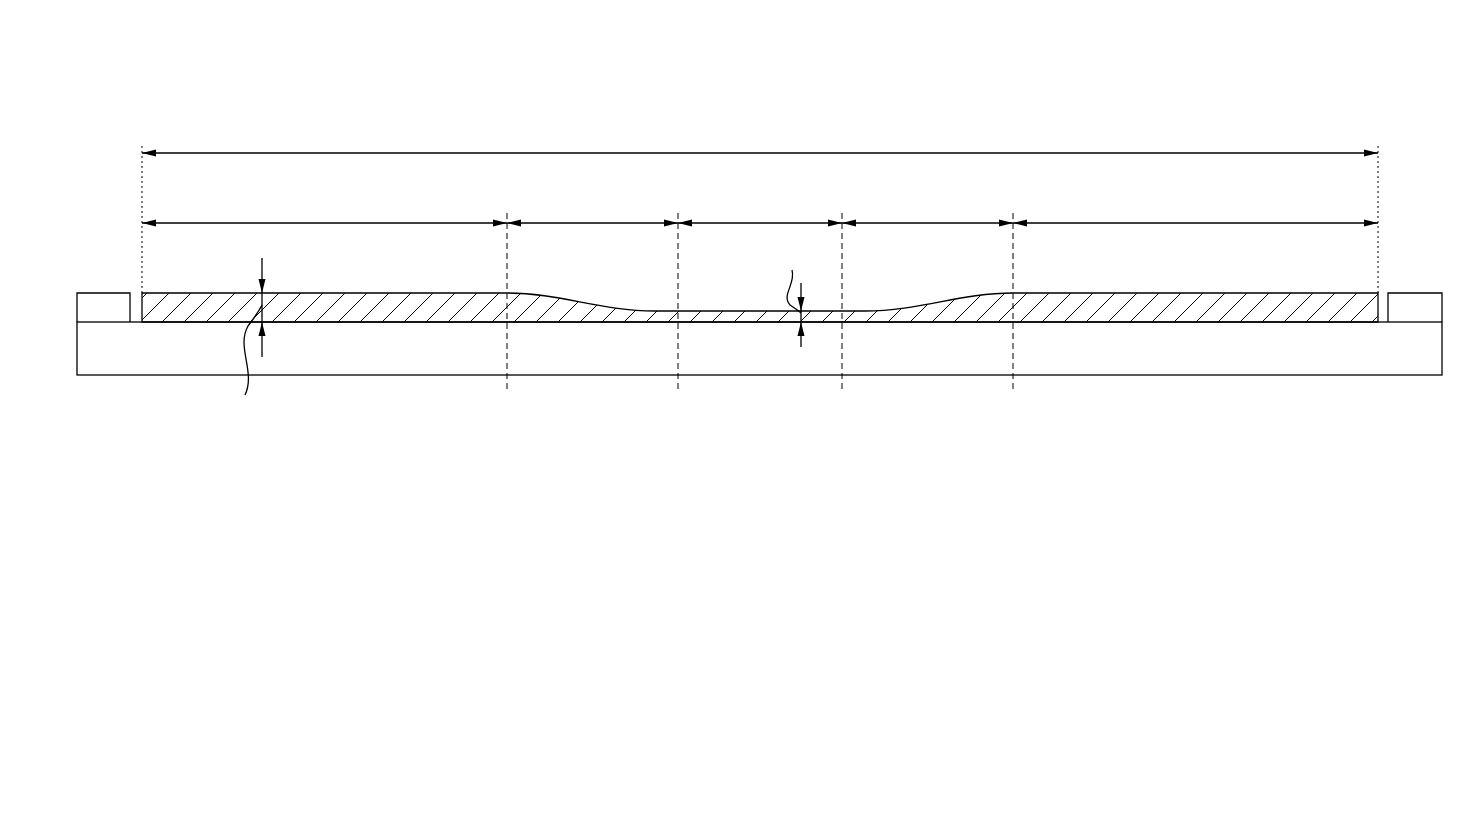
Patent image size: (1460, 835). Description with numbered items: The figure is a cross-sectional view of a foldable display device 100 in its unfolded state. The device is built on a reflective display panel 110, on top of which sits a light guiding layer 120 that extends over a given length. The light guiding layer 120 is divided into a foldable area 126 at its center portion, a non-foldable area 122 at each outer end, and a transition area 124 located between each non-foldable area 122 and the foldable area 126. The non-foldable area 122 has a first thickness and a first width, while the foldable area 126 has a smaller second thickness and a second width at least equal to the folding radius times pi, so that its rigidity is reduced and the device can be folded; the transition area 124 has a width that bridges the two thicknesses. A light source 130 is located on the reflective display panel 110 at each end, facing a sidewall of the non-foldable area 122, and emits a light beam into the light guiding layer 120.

The foldable display device 100 is at (1391, 77).
The reflective display panel 110 is at (1203, 365).
The light guiding layer 120 is at (760, 426).
The non-foldable area 122 is at (452, 312).
The transition area 124 is at (617, 316).
The foldable area 126 is at (757, 312).
The light source 130 is at (108, 302).